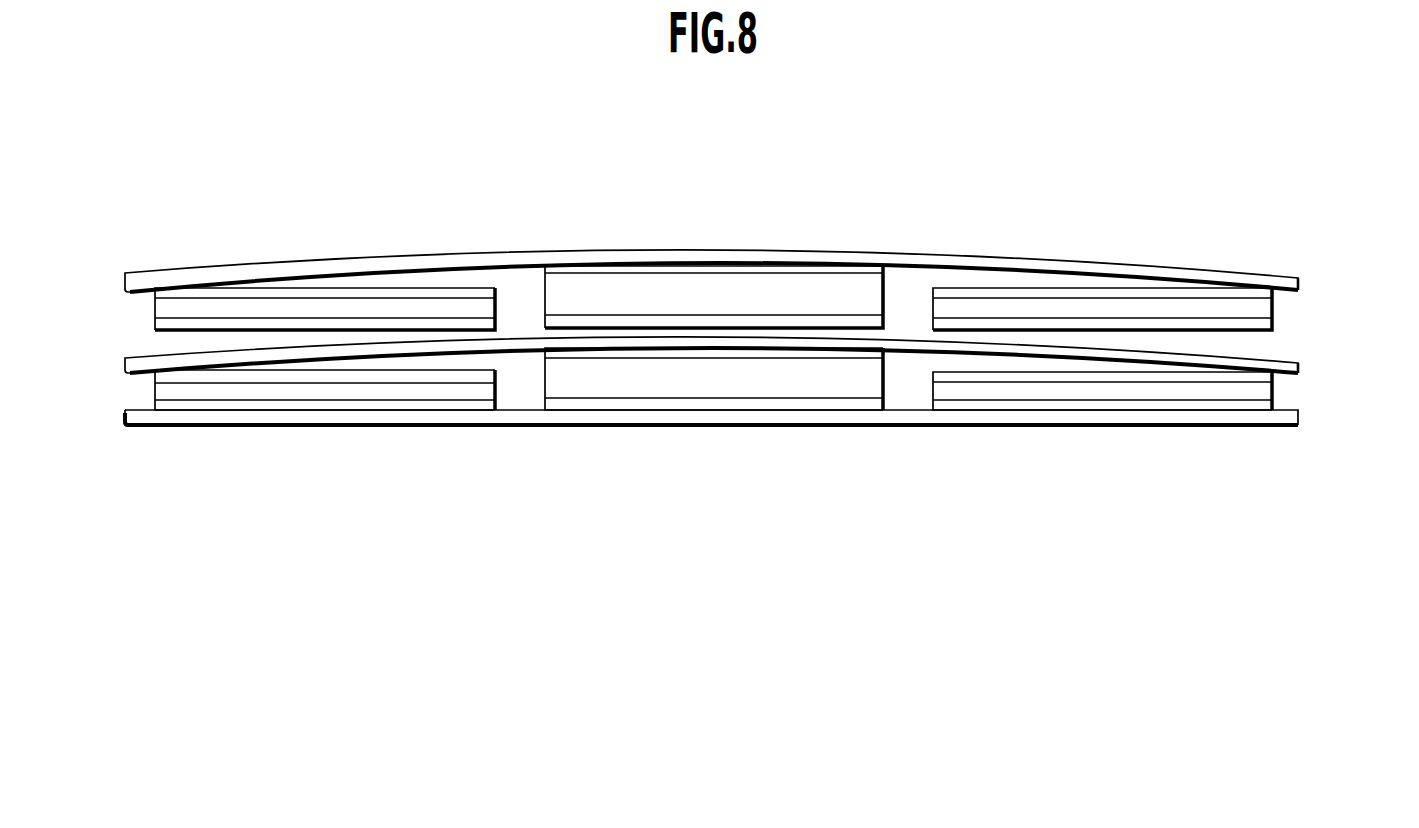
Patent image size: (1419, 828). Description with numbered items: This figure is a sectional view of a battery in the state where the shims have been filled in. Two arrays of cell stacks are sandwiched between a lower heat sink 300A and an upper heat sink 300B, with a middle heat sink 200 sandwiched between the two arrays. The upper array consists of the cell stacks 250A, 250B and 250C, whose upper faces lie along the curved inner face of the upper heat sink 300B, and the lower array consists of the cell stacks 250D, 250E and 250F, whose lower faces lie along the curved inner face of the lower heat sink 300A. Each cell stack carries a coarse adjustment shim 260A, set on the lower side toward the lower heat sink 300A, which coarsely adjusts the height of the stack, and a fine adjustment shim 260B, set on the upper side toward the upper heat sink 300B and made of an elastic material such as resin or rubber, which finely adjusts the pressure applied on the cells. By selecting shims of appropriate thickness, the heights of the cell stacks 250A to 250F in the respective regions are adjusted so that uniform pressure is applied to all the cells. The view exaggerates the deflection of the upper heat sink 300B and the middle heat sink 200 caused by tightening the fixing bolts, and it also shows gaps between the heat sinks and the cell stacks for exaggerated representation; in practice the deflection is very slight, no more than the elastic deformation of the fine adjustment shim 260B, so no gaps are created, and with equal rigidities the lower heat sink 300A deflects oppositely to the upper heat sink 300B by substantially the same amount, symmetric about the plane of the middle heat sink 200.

The middle heat sink 200 is at (1290, 362).
The cell stack 250A is at (156, 310).
The cell stack 250B is at (852, 283).
The cell stack 250C is at (1272, 308).
The cell stack 250D is at (156, 388).
The cell stack 250E is at (845, 395).
The cell stack 250F is at (1272, 388).
The coarse adjustment shim 260A is at (213, 323).
The fine adjustment shim 260B is at (302, 377).
The lower heat sink 300A is at (505, 428).
The upper heat sink 300B is at (515, 260).